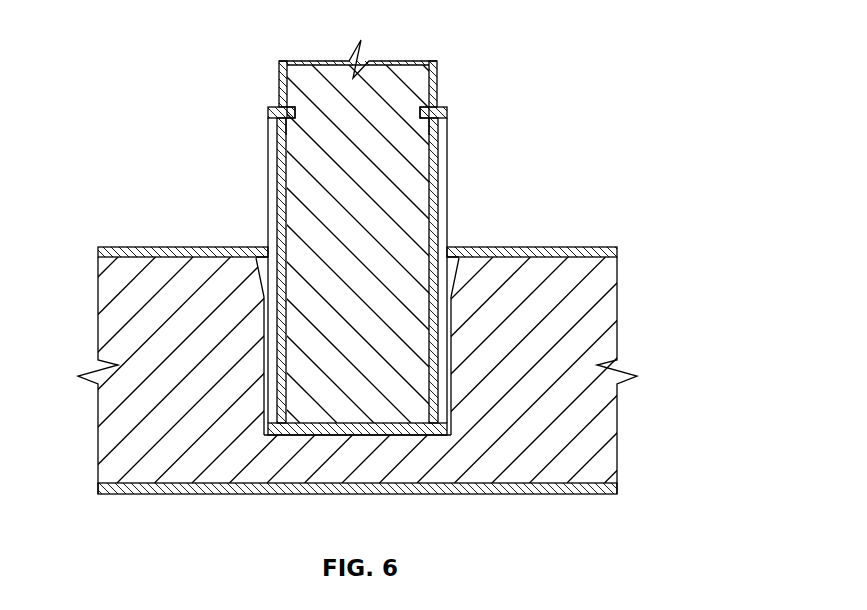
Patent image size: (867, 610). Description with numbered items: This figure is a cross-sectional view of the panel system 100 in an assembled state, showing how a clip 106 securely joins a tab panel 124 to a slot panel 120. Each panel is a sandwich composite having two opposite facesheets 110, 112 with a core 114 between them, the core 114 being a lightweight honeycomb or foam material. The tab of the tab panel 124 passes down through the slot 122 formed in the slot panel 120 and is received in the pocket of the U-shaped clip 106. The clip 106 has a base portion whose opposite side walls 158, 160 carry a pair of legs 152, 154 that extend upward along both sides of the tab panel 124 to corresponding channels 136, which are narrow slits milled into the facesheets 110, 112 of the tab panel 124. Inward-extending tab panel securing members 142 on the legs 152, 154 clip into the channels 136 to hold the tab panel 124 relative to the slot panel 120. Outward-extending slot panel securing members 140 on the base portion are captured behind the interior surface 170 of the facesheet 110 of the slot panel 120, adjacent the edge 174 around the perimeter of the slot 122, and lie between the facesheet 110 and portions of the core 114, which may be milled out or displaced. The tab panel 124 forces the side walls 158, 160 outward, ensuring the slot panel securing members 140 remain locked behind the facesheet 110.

The panel system 100 is at (619, 88).
The clip 106 is at (262, 412).
The facesheet 110 is at (284, 68).
The facesheet 112 is at (438, 66).
The core 114 is at (350, 77).
The slot panel 120 is at (139, 247).
The slot 122 is at (447, 425).
The tab panel 124 is at (446, 85).
The channels 136 is at (283, 163).
The slot panel securing members 140 is at (263, 263).
The tab panel securing members 142 is at (418, 107).
The leg 152 is at (298, 126).
The leg 154 is at (418, 126).
The side wall 158 is at (277, 357).
The side wall 160 is at (442, 362).
The interior surface 170 is at (183, 250).
The edge 174 is at (269, 250).